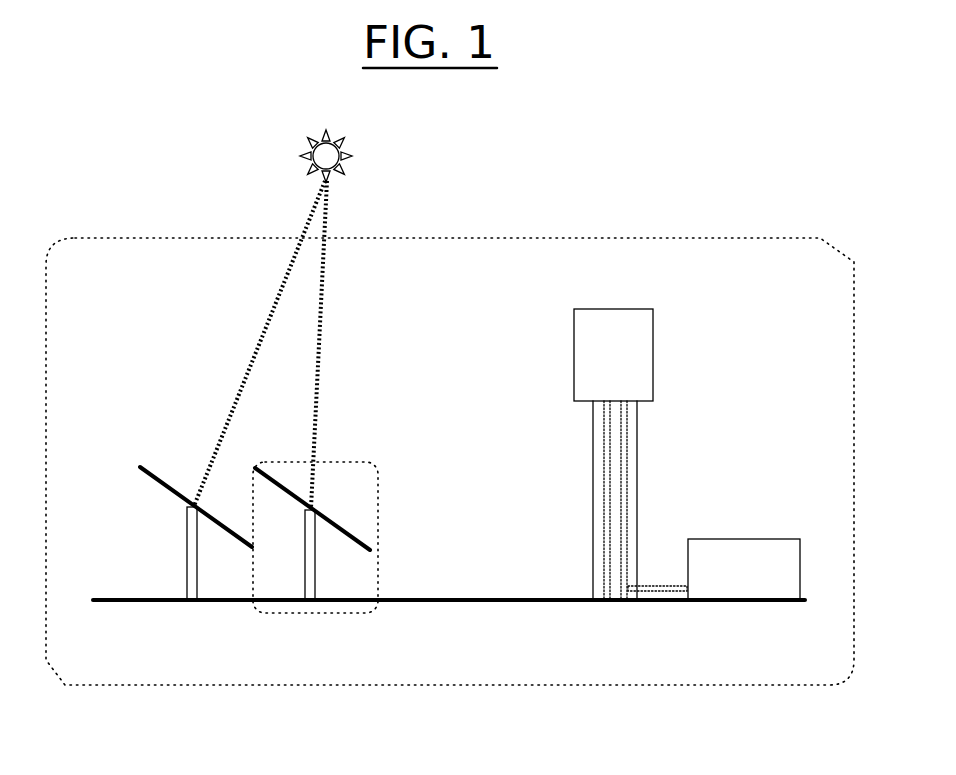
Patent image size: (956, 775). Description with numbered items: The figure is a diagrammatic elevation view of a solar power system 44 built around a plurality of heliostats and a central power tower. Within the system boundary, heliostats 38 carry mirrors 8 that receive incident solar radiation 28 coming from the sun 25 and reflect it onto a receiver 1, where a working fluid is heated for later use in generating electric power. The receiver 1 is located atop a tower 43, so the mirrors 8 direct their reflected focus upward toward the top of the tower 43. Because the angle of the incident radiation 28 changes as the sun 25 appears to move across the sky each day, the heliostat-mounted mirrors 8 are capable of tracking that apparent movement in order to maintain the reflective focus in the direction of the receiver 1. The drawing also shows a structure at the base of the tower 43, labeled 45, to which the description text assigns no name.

The receiver 1 is at (653, 357).
The mirrors 8 is at (162, 490).
The sun 25 is at (348, 165).
The incident solar radiation 28 is at (282, 273).
The heliostats 38 is at (297, 585).
The tower 43 is at (638, 457).
The solar power system 44 is at (178, 673).
The storage unit 45 is at (780, 590).